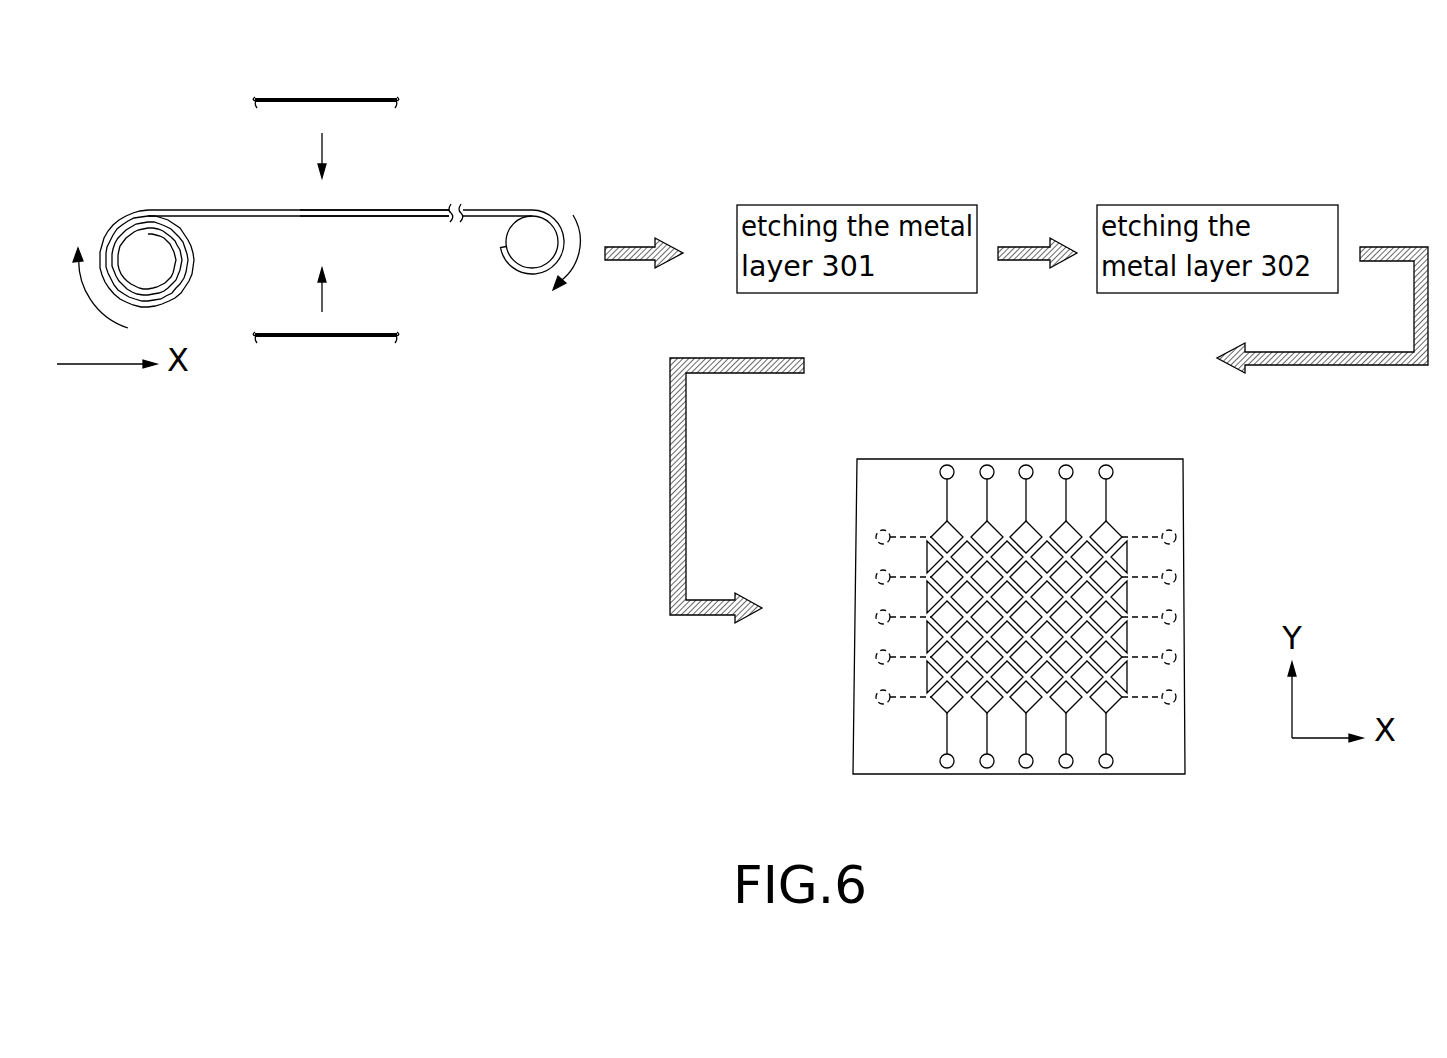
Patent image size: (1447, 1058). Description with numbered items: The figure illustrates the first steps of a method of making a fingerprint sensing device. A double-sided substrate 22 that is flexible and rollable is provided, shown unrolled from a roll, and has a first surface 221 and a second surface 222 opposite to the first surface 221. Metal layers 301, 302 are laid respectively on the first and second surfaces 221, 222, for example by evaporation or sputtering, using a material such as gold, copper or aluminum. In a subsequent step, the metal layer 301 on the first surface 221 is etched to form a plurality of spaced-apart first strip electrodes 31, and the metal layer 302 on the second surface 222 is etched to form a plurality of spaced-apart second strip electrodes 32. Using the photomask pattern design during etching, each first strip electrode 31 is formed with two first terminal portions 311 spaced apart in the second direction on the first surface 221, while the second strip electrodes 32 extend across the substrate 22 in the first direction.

The double-sided substrate 22 is at (200, 210).
The first surface 221 is at (405, 209).
The second surface 222 is at (375, 218).
The metal layer 301 is at (352, 99).
The metal layer 302 is at (350, 340).
The first strip electrodes 31 is at (1106, 790).
The first terminal portions 311 is at (1024, 769).
The second strip electrodes 32 is at (860, 572).